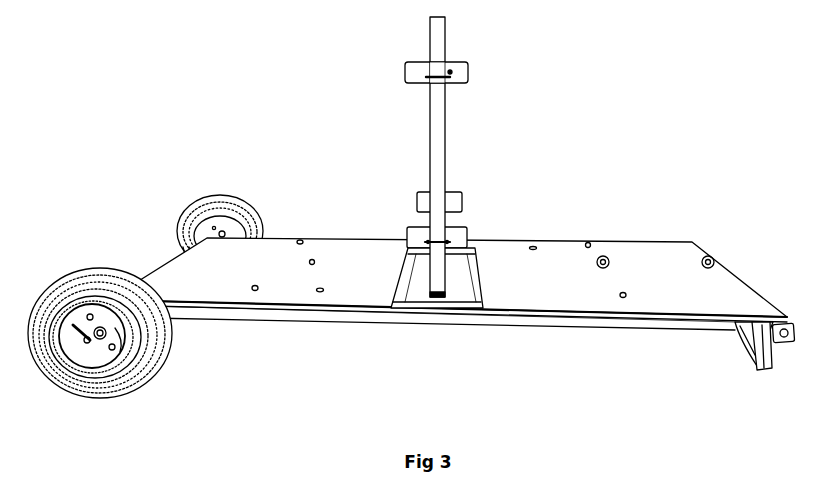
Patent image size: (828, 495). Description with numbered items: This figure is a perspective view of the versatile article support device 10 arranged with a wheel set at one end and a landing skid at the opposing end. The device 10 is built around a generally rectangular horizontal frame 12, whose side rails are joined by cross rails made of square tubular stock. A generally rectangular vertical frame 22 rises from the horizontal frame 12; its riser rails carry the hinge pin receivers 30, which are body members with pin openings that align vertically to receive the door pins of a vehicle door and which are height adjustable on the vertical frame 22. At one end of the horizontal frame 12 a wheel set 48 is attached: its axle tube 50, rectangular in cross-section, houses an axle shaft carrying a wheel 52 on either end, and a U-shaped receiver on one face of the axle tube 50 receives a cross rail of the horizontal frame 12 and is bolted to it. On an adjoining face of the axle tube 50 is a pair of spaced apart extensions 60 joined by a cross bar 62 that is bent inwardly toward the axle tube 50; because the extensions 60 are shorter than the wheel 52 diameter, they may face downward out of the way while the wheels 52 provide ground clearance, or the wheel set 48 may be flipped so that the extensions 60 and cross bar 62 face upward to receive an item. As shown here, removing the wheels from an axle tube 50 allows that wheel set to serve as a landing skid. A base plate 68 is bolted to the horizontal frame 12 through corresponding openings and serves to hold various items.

The versatile article support device 10 is at (462, 293).
The horizontal frame 12 is at (562, 333).
The vertical frame 22 is at (450, 147).
The hinge pin receivers 30 is at (475, 77).
The wheel set 48 is at (175, 228).
The axle tube 50 is at (743, 350).
The wheel 52 is at (232, 202).
The extensions 60 is at (752, 360).
The cross bar 62 is at (745, 350).
The base plate 68 is at (646, 252).